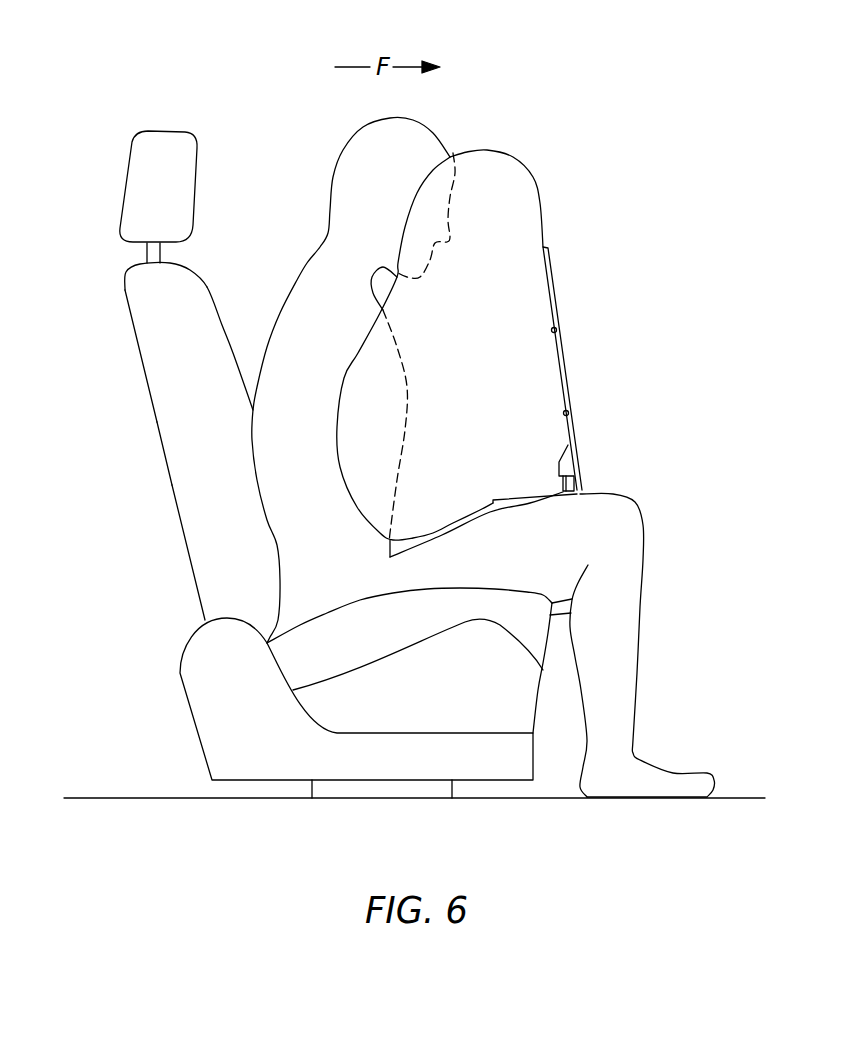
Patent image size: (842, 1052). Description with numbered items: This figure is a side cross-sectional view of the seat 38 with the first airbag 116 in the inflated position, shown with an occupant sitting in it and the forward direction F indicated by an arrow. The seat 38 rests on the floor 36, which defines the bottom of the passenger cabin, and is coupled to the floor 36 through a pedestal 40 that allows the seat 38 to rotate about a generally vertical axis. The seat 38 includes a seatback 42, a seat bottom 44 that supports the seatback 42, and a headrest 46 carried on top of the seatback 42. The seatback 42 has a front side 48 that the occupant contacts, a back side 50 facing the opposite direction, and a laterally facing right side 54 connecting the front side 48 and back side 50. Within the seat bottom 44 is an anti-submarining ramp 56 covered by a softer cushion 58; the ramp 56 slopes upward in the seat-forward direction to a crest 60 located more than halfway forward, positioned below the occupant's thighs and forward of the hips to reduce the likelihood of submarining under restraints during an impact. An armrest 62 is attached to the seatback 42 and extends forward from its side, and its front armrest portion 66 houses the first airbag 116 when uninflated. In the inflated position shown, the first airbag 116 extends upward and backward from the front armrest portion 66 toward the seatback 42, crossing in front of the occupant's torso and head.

The floor 36 is at (148, 797).
The seat 38 is at (220, 50).
The pedestal 40 is at (457, 787).
The seatback 42 is at (137, 350).
The seat bottom 44 is at (545, 662).
The headrest 46 is at (127, 173).
The front side 48 is at (237, 357).
The back side 50 is at (157, 430).
The right side 54 is at (188, 483).
The anti-submarining ramp 56 is at (530, 650).
The cushion 58 is at (550, 615).
The crest 60 is at (483, 618).
The armrest 62 is at (570, 500).
The front armrest portion 66 is at (583, 472).
The first airbag 116 is at (525, 163).